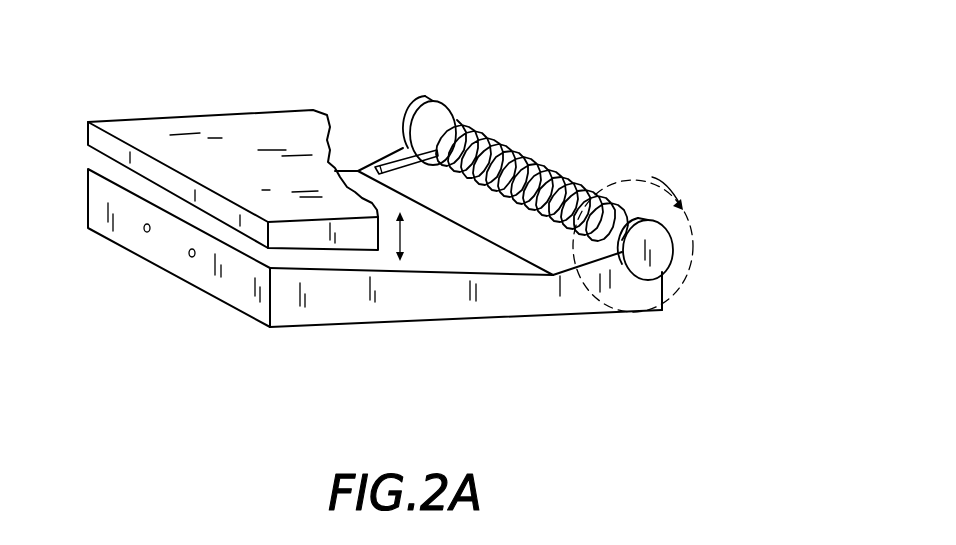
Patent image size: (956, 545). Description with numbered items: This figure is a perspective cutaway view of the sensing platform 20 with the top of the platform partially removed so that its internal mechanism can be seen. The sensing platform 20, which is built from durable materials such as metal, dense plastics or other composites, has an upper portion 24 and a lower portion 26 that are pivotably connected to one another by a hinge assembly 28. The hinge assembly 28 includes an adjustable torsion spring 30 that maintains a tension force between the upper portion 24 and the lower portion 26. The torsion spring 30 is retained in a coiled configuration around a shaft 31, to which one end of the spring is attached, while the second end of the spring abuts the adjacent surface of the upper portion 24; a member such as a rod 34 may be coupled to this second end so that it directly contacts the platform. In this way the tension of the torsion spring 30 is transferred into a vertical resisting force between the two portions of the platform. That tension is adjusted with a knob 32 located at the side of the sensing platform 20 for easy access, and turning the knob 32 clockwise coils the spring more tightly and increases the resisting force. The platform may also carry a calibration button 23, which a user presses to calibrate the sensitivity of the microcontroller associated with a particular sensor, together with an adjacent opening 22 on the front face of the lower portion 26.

The sensing platform 20 is at (606, 100).
The hole 22 is at (144, 233).
The calibration button 23 is at (189, 259).
The upper portion 24 is at (243, 130).
The lower portion 26 is at (327, 308).
The hinge assembly 28 is at (678, 249).
The torsion spring 30 is at (597, 190).
The shaft 31 is at (463, 130).
The knob 32 is at (655, 216).
The rod 34 is at (404, 148).